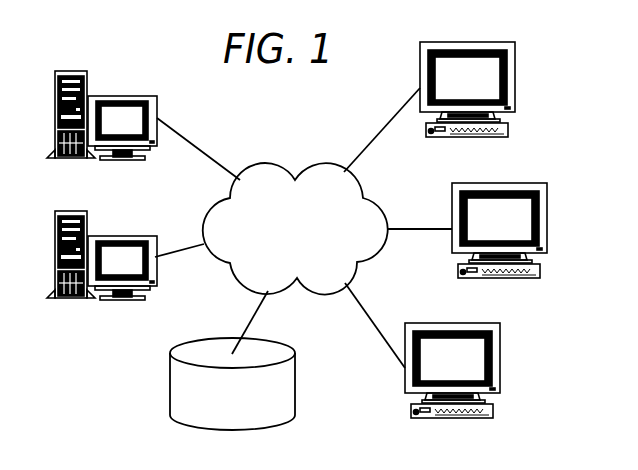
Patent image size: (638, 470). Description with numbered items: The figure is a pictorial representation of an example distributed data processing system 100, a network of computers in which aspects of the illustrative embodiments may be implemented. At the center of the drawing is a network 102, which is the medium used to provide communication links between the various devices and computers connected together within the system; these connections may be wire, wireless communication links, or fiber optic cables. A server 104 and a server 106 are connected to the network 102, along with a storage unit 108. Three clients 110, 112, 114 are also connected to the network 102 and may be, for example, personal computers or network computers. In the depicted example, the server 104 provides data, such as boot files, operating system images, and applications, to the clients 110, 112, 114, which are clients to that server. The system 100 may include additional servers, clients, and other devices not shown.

The distributed data processing system 100 is at (128, 369).
The network 102 is at (266, 166).
The server 104 is at (119, 95).
The server 106 is at (102, 265).
The storage unit 108 is at (295, 377).
The client 110 is at (515, 80).
The client 112 is at (547, 221).
The client 114 is at (500, 361).